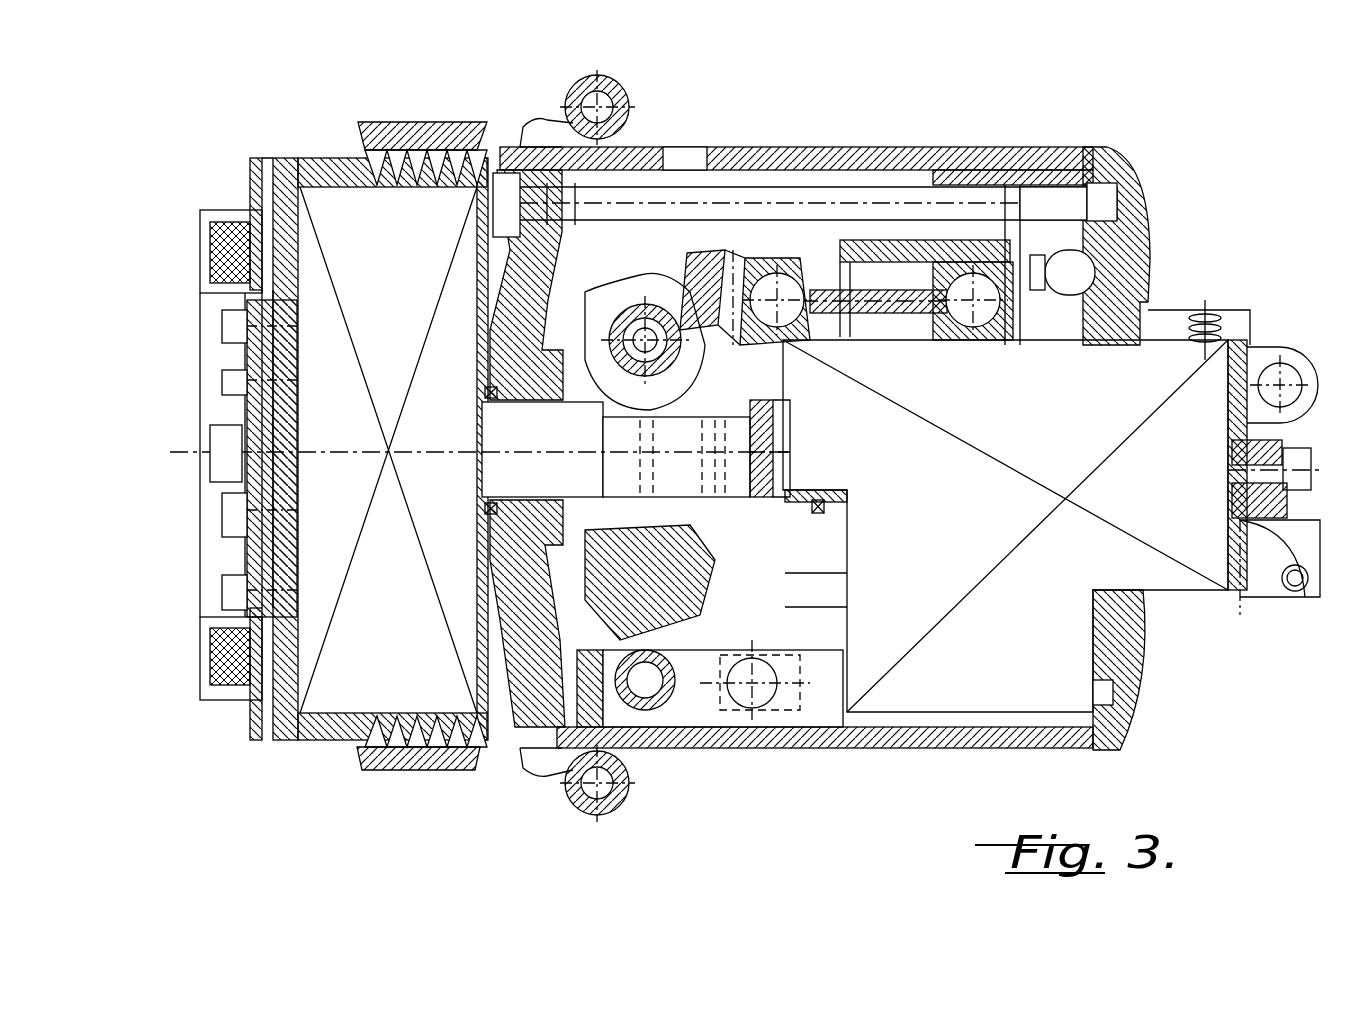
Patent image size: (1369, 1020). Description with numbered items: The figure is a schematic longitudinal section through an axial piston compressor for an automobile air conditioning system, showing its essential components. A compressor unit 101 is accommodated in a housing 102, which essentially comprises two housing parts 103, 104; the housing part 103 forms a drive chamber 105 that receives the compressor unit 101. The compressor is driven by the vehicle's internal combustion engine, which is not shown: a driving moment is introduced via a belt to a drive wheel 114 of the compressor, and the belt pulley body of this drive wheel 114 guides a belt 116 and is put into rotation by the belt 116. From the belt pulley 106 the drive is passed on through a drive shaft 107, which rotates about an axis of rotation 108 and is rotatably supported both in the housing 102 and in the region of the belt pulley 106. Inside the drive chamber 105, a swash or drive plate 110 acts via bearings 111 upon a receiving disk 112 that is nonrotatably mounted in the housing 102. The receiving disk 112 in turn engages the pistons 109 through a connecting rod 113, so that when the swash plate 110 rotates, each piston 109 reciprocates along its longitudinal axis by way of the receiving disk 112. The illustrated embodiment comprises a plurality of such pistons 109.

The compressor unit 101 is at (679, 262).
The housing 102 is at (910, 437).
The housing part 103 is at (837, 147).
The housing part 104 is at (1150, 233).
The drive chamber 105 is at (628, 263).
The belt pulley 106 is at (315, 158).
The drive shaft 107 is at (577, 441).
The axis of rotation 108 is at (175, 462).
The piston 109 is at (997, 290).
The swash plate 110 is at (572, 600).
The bearings 111 is at (702, 365).
The receiving disk 112 is at (732, 345).
The connecting rod 113 is at (873, 290).
The drive wheel 114 is at (372, 473).
The belt 116 is at (453, 122).